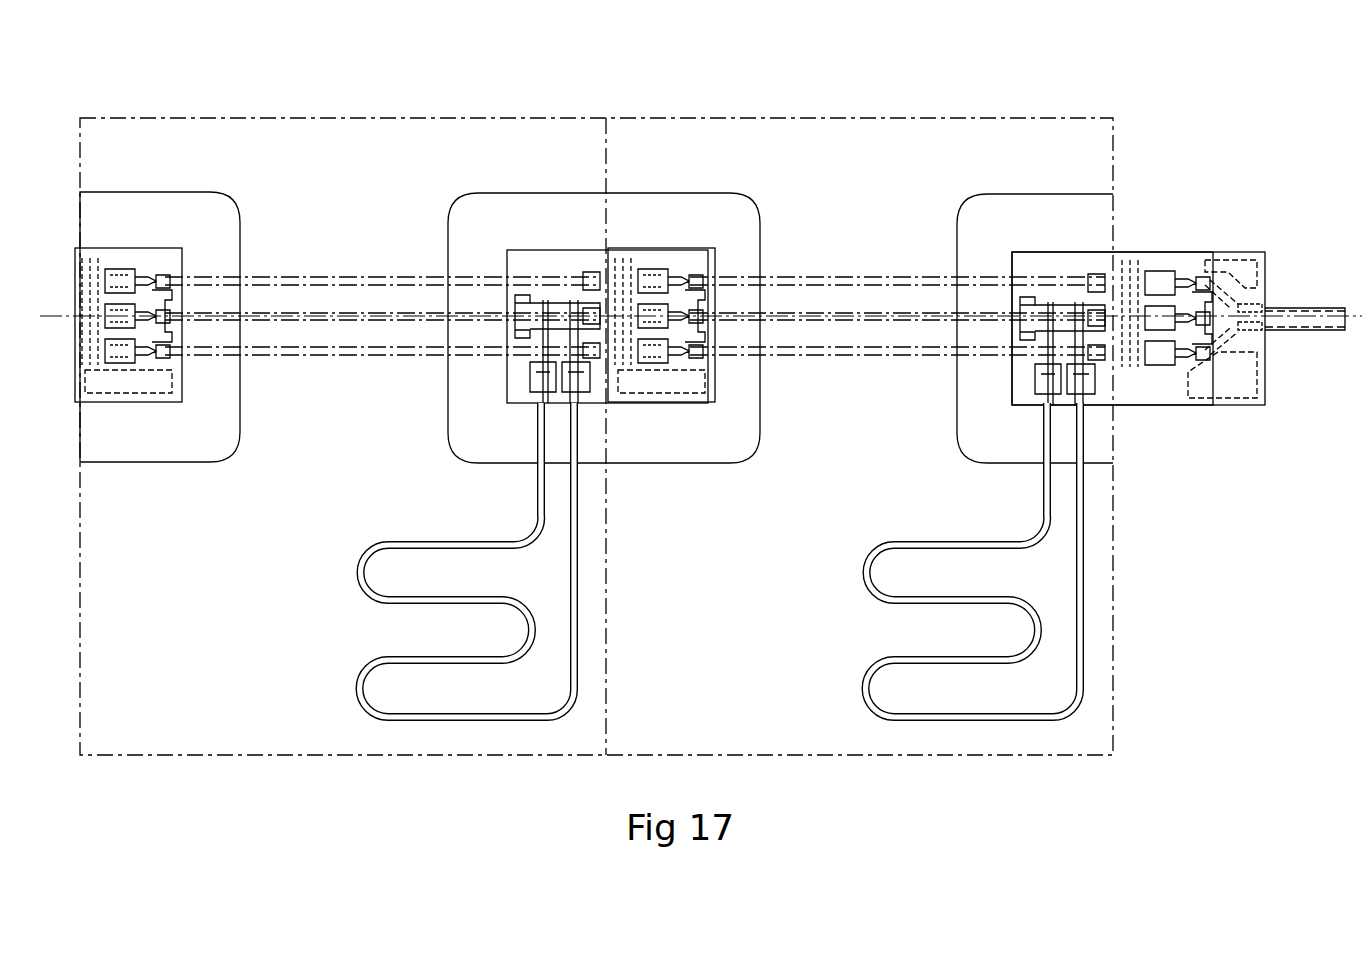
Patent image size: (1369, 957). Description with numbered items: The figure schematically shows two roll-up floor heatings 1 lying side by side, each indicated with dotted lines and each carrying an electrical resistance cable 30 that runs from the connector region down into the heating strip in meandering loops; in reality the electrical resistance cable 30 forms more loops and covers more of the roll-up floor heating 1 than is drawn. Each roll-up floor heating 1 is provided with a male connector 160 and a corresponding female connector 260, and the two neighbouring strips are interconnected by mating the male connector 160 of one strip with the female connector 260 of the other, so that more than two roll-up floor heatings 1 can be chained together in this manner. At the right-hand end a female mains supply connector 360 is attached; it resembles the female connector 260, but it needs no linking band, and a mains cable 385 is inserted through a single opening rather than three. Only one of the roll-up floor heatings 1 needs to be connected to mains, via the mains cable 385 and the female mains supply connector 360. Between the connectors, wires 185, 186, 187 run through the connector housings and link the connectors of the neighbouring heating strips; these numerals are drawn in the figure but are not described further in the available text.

The roll-up floor heating 1 is at (195, 578).
The electrical resistance cable 30 is at (455, 721).
The male connector 160 is at (560, 178).
The wire 185 is at (412, 280).
The wire 186 is at (293, 347).
The wire 187 is at (360, 312).
The female connector 260 is at (178, 175).
The female mains supply connector 360 is at (1150, 232).
The mains cable 385 is at (1298, 306).